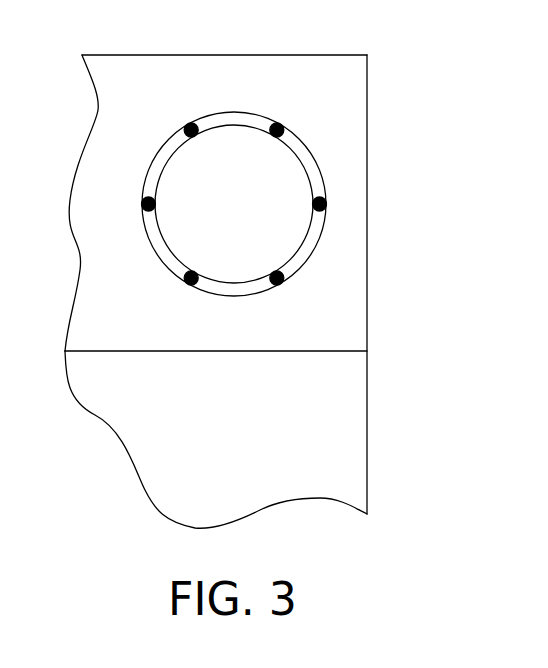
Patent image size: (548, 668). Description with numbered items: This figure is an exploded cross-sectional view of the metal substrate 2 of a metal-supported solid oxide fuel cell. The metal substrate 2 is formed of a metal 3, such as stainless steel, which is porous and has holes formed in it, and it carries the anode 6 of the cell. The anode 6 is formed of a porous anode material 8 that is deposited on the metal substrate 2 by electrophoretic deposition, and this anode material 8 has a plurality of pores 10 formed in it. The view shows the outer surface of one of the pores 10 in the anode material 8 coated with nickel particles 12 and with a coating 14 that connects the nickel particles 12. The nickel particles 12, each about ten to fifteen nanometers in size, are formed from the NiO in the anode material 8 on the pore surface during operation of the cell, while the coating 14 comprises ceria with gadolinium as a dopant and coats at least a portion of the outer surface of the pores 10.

The metal substrate 2 is at (238, 439).
The metal 3 is at (313, 460).
The anode 6 is at (367, 167).
The porous anode material 8 is at (337, 310).
The pores 10 is at (277, 156).
The nickel particles 12 is at (276, 128).
The coating 14 is at (231, 121).